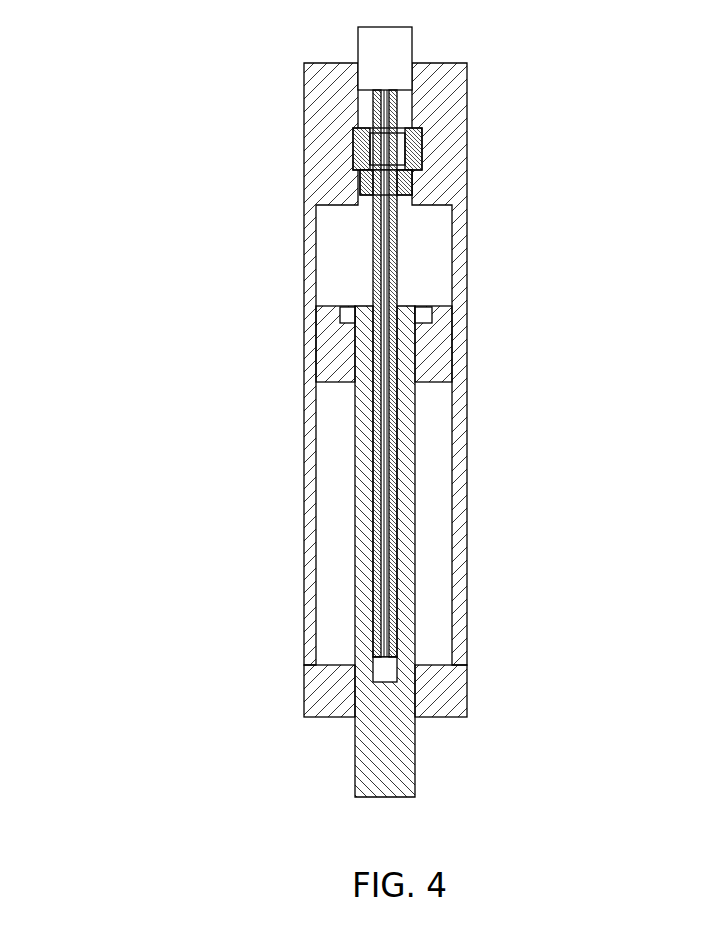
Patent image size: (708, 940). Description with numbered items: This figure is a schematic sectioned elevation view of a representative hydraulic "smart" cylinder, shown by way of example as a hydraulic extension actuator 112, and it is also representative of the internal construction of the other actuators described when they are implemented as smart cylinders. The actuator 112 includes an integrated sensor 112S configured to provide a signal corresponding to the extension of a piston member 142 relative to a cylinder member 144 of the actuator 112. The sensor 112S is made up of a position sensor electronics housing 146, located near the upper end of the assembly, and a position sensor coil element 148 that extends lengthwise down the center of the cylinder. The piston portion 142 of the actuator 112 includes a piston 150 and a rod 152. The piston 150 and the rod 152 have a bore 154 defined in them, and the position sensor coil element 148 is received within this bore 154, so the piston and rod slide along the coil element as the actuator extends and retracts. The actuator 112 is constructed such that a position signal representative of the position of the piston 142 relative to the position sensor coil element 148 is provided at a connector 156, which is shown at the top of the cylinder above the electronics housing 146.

The hydraulic extension actuator 112 is at (86, 99).
The integrated sensor 112S is at (498, 373).
The piston member 142 is at (485, 551).
The cylinder member 144 is at (462, 445).
The position sensor electronics housing 146 is at (393, 155).
The position sensor coil element 148 is at (383, 251).
The piston 150 is at (437, 354).
The rod 152 is at (412, 549).
The bore 154 is at (373, 452).
The connector 156 is at (393, 48).